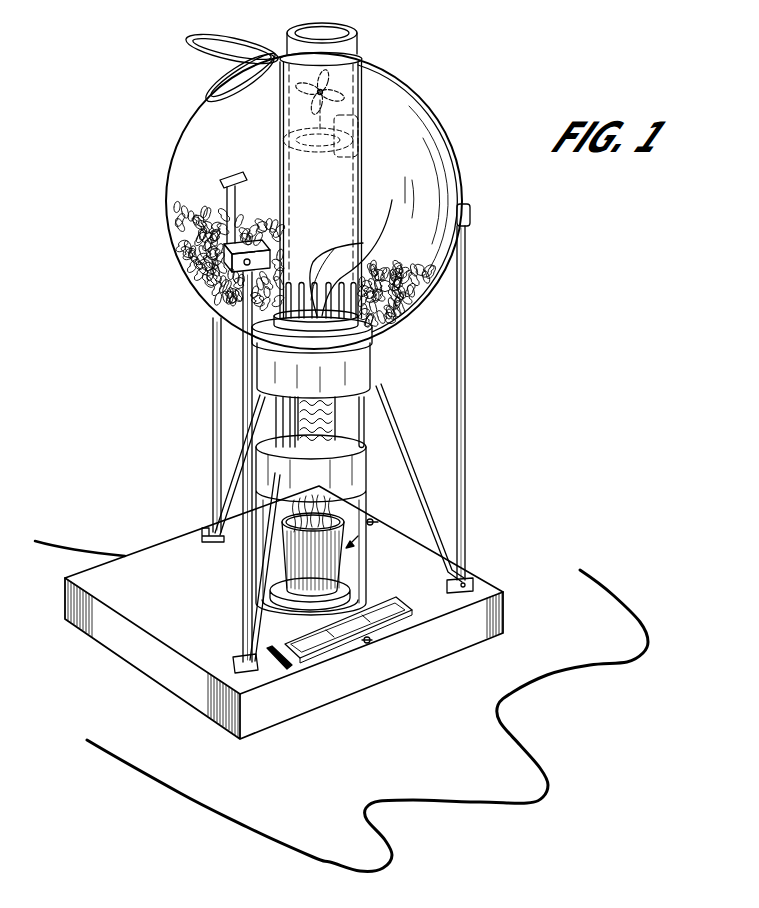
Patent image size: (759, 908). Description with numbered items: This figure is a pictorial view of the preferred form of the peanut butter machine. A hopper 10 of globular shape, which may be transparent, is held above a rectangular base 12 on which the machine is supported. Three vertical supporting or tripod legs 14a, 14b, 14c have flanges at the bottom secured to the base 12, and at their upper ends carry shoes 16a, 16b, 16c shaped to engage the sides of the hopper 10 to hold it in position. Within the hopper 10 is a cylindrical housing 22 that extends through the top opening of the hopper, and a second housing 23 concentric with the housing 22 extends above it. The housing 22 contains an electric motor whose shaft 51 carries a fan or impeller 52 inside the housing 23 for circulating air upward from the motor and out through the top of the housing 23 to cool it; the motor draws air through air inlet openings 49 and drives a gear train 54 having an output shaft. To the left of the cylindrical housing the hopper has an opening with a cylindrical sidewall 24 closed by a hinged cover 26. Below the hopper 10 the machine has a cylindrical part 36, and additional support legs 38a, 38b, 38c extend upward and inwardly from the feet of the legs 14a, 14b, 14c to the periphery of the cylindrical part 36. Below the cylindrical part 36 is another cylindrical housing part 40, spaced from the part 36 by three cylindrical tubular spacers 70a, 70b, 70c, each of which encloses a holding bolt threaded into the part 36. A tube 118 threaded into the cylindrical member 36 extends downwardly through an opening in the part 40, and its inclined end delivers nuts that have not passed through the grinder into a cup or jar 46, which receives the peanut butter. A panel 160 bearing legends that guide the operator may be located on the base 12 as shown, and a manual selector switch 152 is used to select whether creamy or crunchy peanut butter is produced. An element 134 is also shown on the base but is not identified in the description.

The hopper 10 is at (449, 116).
The rectangular base 12 is at (488, 587).
The vertical supporting leg 14a is at (212, 345).
The vertical supporting leg 14b is at (243, 618).
The vertical supporting leg 14c is at (467, 388).
The shoe 16a is at (233, 172).
The shoe 16b is at (250, 242).
The shoe 16c is at (472, 210).
The cylindrical housing 22 is at (368, 213).
The second housing 23 is at (356, 55).
The cylindrical sidewall 24 is at (207, 96).
The hinged cover 26 is at (190, 62).
The cylindrical part 36 is at (372, 370).
The support leg 38a is at (235, 483).
The support leg 38b is at (270, 622).
The support leg 38c is at (396, 388).
The cylindrical housing part 40 is at (360, 470).
The cup or jar 46 is at (335, 580).
The air inlet openings 49 is at (363, 243).
The motor shaft 51 is at (358, 157).
The fan or impeller 52 is at (333, 94).
The gear train 54 is at (385, 325).
The cylindrical tubular spacer 70a is at (278, 412).
The cylindrical tubular spacer 70b is at (292, 428).
The cylindrical tubular spacer 70c is at (364, 416).
The tube 118 is at (296, 522).
The cord clip 134 is at (270, 665).
The manual selector switch 152 is at (367, 643).
The panel 160 is at (410, 607).